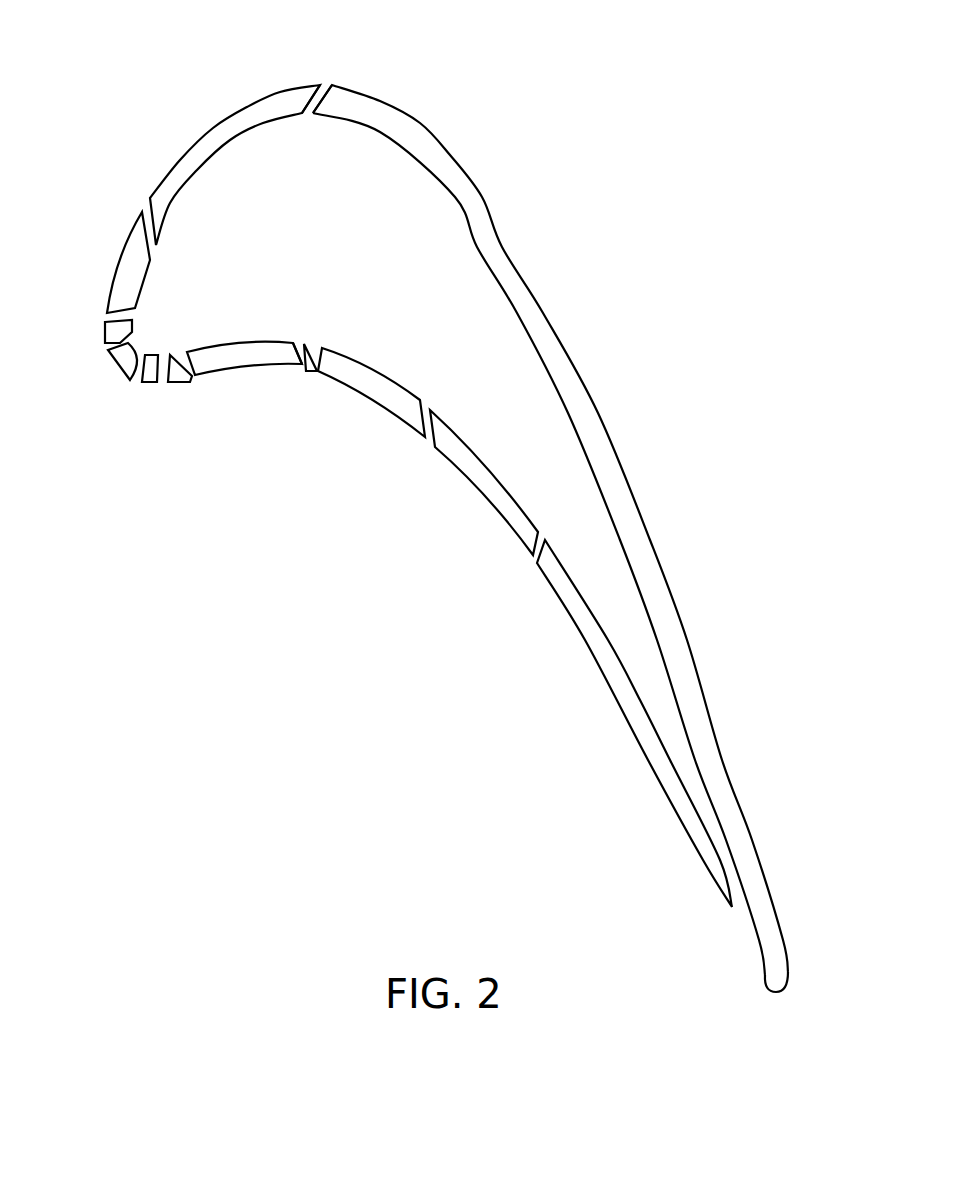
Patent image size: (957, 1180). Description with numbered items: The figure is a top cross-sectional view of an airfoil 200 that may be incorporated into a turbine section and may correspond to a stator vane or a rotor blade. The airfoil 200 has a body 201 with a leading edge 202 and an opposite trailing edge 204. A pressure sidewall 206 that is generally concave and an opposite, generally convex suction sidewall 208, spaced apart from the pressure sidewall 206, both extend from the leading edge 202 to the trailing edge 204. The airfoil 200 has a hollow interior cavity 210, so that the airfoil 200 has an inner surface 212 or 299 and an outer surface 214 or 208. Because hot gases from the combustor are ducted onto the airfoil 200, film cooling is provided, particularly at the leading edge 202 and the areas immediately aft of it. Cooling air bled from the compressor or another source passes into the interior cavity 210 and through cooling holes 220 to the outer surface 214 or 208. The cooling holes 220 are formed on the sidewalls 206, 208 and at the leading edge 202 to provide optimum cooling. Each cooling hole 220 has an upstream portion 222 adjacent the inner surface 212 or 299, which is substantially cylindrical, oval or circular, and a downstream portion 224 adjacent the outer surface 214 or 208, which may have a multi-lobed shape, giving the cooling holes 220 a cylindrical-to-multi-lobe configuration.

The airfoil 200 is at (178, 91).
The body 201 is at (402, 122).
The leading edge 202 is at (112, 378).
The trailing edge 204 is at (777, 993).
The pressure sidewall 206 is at (402, 420).
The suction sidewall 208 is at (482, 197).
The interior cavity 210 is at (341, 256).
The inner surface 212 is at (228, 352).
The outer surface 214 is at (216, 377).
The cooling holes 220 is at (328, 85).
The upstream portion 222 is at (305, 345).
The downstream portion 224 is at (297, 368).
The inner surface 299 is at (477, 235).